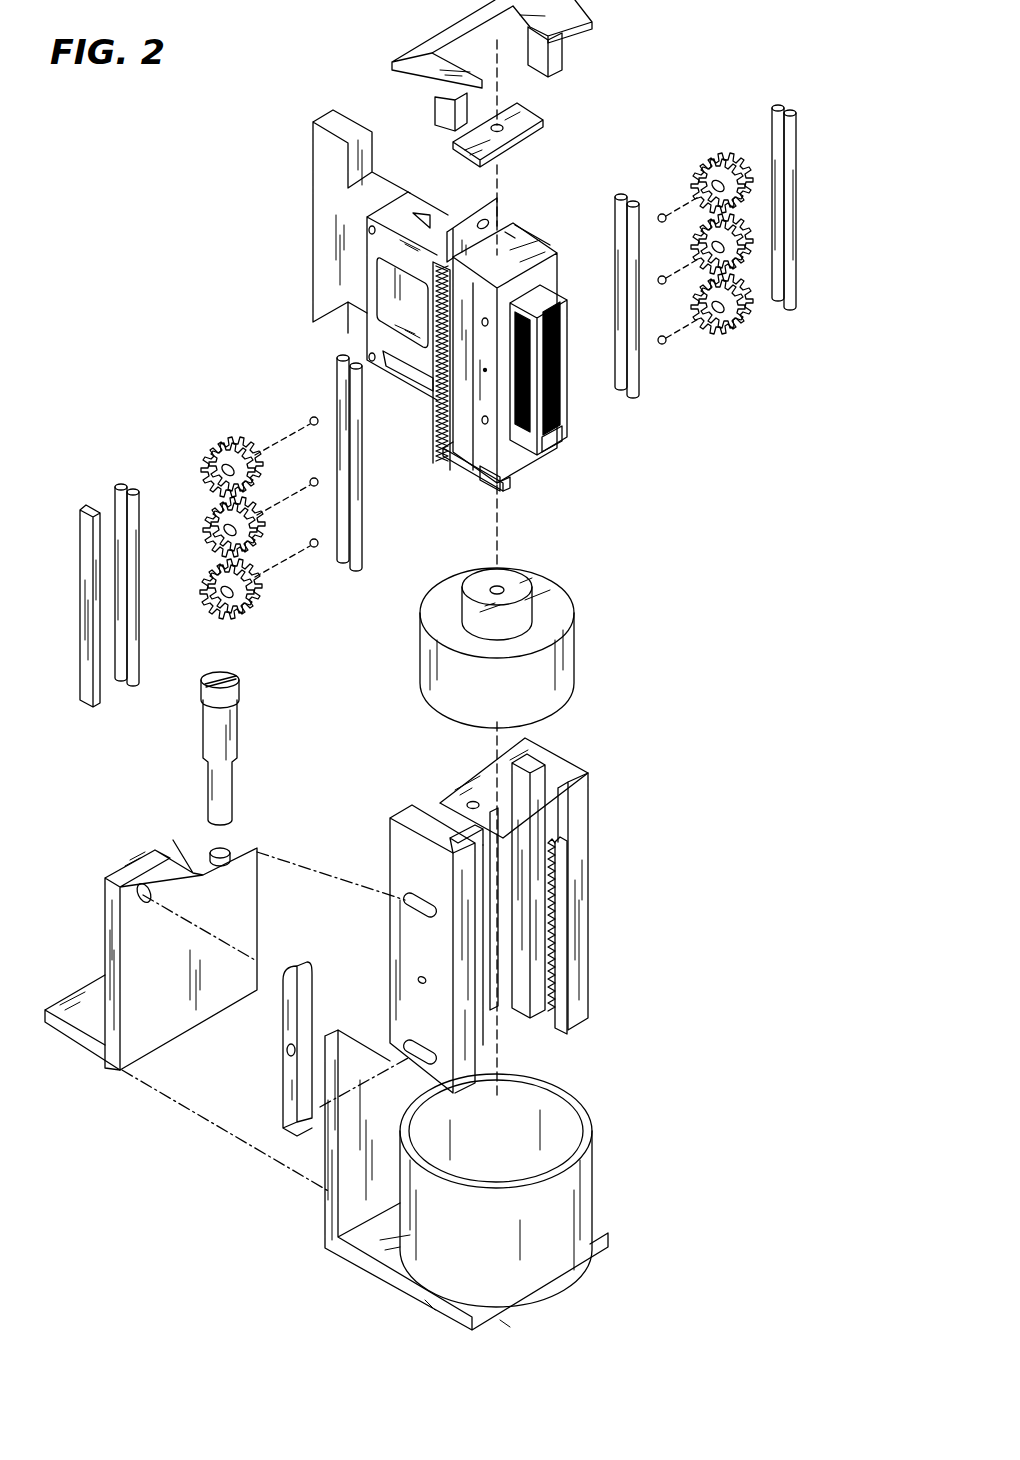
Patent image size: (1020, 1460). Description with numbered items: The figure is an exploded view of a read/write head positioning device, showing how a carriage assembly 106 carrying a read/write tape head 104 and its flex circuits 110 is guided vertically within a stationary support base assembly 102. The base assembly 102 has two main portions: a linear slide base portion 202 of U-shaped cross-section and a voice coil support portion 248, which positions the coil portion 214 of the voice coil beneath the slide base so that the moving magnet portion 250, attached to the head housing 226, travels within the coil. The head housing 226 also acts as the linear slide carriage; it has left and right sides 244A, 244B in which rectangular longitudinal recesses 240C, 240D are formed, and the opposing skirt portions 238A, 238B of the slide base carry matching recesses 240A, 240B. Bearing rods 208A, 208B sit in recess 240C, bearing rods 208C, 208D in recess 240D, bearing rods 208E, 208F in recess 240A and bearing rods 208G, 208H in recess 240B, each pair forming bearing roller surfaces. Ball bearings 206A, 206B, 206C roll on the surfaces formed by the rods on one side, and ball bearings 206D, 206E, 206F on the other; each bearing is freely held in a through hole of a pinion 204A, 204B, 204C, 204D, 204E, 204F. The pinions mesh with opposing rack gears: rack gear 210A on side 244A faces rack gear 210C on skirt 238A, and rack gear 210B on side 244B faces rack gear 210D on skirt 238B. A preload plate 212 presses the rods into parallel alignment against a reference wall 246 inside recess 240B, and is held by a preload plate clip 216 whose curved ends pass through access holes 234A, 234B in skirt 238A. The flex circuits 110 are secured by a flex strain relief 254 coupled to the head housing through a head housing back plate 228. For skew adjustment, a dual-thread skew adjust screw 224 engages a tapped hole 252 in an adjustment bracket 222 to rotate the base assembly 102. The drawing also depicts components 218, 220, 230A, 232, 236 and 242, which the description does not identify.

The support base assembly 102 is at (419, 1180).
The read/write tape head 104 is at (565, 303).
The carriage assembly 106 is at (542, 182).
The flex circuits 110 is at (372, 135).
The linear slide base portion 202 is at (603, 886).
The pinion 204A is at (208, 456).
The pinion 204B is at (207, 530).
The pinion 204C is at (205, 592).
The pinion 204D is at (702, 160).
The pinion 204E is at (698, 270).
The pinion 204F is at (720, 337).
The ball bearing 206A is at (315, 416).
The ball bearing 206B is at (313, 487).
The ball bearing 206C is at (314, 548).
The ball bearing 206D is at (661, 213).
The ball bearing 206E is at (661, 275).
The ball bearing 206F is at (662, 345).
The bearing rod 208A is at (340, 355).
The bearing rod 208B is at (354, 568).
The bearing rod 208C is at (620, 194).
The bearing rod 208D is at (633, 398).
The bearing rod 208E is at (118, 485).
The bearing rod 208F is at (134, 683).
The bearing rod 208G is at (777, 105).
The bearing rod 208H is at (790, 300).
The rack gear 210A is at (436, 436).
The rack gear 210B is at (528, 208).
The rack gear 210C is at (500, 1045).
The rack gear 210D is at (565, 1012).
The preload plate 212 is at (83, 528).
The coil portion 214 is at (605, 1190).
The preload plate clip 216 is at (285, 1055).
The top plate 218 is at (515, 112).
The top bracket 220 is at (418, 62).
The adjustment bracket 222 is at (157, 945).
The skew adjust screw 224 is at (212, 718).
The head housing 226 is at (532, 326).
The head housing back plate 228 is at (470, 212).
The lower tab 230A is at (482, 490).
The channel bracket 232 is at (489, 902).
The access hole 234A is at (425, 915).
The access hole 234B is at (425, 1042).
The top web 236 is at (400, 808).
The skirt portion 238A is at (385, 838).
The skirt portion 238B is at (590, 772).
The longitudinal recess 240A is at (432, 838).
The longitudinal recess 240B is at (550, 766).
The longitudinal recess 240C is at (448, 462).
The longitudinal recess 240D is at (533, 235).
The hole 242 is at (143, 903).
The left side 244A is at (500, 487).
The right side 244B is at (560, 442).
The reference wall 246 is at (556, 845).
The voice coil support portion 248 is at (328, 1258).
The moving magnet portion 250 is at (512, 689).
The tapped hole 252 is at (230, 845).
The flex strain relief 254 is at (420, 382).